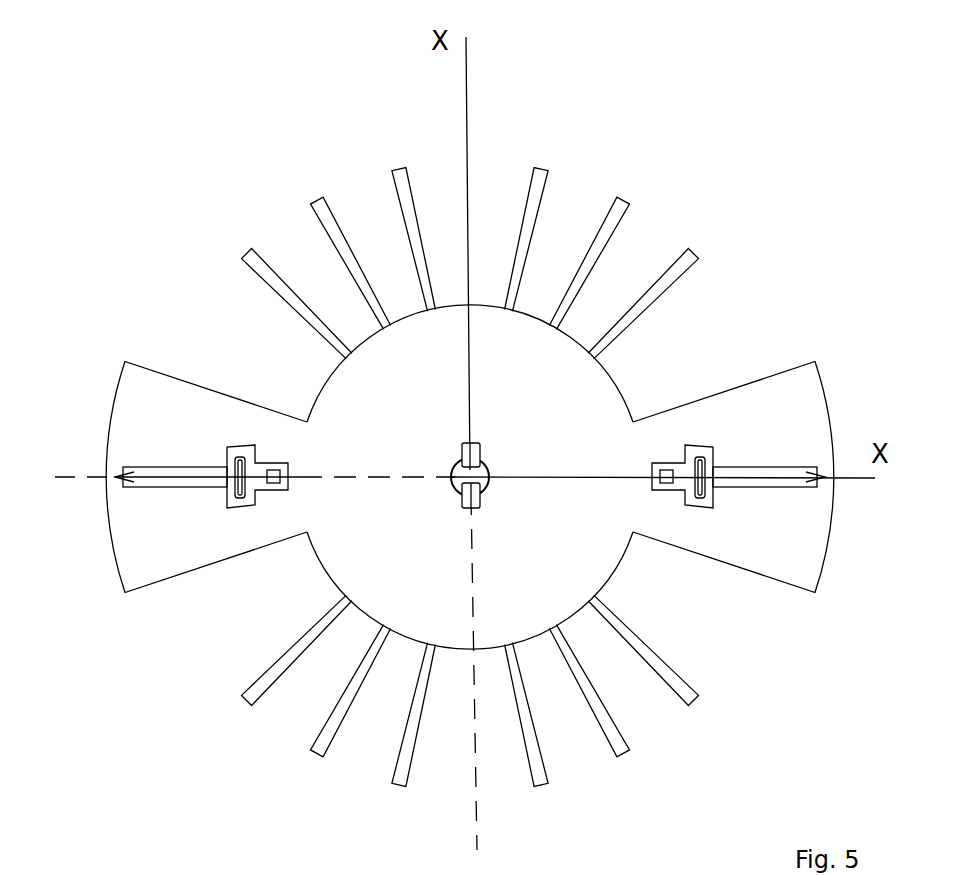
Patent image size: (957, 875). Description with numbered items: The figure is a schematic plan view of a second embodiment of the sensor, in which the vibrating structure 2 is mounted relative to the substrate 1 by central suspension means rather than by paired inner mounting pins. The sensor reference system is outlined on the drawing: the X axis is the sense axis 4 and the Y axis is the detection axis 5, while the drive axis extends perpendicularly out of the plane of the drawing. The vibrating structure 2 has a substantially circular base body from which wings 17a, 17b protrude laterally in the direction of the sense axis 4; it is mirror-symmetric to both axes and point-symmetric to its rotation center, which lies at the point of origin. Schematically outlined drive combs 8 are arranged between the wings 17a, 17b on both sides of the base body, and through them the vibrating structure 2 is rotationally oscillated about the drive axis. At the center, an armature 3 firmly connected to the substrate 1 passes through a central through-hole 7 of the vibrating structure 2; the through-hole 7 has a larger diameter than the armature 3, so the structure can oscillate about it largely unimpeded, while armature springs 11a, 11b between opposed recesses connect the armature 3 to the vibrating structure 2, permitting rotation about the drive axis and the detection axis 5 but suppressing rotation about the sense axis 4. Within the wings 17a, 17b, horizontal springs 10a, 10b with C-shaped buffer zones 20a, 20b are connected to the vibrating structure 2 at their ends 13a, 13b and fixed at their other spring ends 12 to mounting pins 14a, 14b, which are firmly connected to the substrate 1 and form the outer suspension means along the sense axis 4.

The substrate 1 is at (678, 188).
The vibrating structure 2 is at (458, 303).
The armature 3 is at (344, 545).
The sense axis 4 is at (862, 480).
The detection axis 5 is at (466, 88).
The central through-hole 7 is at (482, 465).
The drive combs 8 is at (265, 265).
The horizontal spring 10a is at (743, 475).
The horizontal spring 10b is at (130, 542).
The armature spring 11a is at (478, 450).
The armature spring 11b is at (482, 503).
The slot / guide opening 12 is at (247, 452).
The end of horizontal spring 13a is at (818, 477).
The end of horizontal spring 13b is at (82, 508).
The mounting pin 14a is at (668, 472).
The mounting pin 14b is at (217, 557).
The wing 17a is at (760, 540).
The wing 17b is at (177, 459).
The buffer zone 20a is at (702, 505).
The buffer zone 20b is at (220, 425).